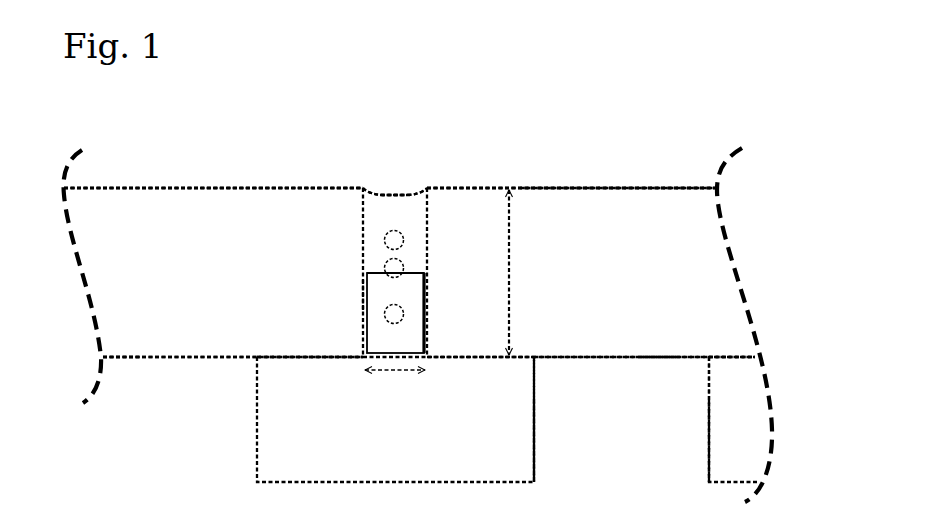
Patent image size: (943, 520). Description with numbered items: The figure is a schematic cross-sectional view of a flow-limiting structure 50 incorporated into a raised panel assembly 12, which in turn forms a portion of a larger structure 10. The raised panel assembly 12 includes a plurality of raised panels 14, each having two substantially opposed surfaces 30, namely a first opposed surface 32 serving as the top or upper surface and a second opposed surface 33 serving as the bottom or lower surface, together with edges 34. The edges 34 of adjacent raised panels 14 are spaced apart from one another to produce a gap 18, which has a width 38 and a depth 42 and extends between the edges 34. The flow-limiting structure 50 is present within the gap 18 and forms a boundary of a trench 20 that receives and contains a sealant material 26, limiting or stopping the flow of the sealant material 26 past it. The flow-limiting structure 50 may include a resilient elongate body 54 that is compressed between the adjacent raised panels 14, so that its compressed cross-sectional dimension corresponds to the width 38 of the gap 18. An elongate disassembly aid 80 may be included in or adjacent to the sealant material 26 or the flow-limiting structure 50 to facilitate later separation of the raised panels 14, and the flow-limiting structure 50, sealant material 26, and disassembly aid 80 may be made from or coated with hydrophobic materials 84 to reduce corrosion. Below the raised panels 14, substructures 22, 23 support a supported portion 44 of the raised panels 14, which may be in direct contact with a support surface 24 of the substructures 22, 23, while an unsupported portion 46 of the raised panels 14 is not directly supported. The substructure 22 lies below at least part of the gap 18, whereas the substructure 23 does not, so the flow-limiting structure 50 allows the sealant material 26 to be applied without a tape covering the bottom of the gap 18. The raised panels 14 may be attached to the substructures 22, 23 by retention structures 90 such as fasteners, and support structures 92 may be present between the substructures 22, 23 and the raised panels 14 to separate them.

The structure 10 is at (722, 51).
The raised panel assembly 12 is at (695, 91).
The raised panels 14 is at (107, 200).
The gap 18 is at (392, 168).
The trench 20 is at (387, 178).
The substructure 22 is at (438, 478).
The substructure 23 is at (730, 478).
The support surface 24 is at (274, 357).
The sealant material 26 is at (392, 190).
The opposed surfaces 30 is at (165, 187).
The first opposed surface 32 is at (238, 186).
The second opposed surface 33 is at (138, 365).
The edges 34 is at (366, 202).
The width 38 is at (405, 377).
The depth 42 is at (512, 273).
The supported portion 44 is at (303, 369).
The unsupported portion 46 is at (123, 368).
The flow-limiting structure 50 is at (375, 270).
The resilient elongate body 54 is at (377, 290).
The elongate disassembly aid 80 is at (405, 241).
The hydrophobic materials 84 is at (343, 294).
The retention structures 90 is at (696, 421).
The support structures 92 is at (706, 383).